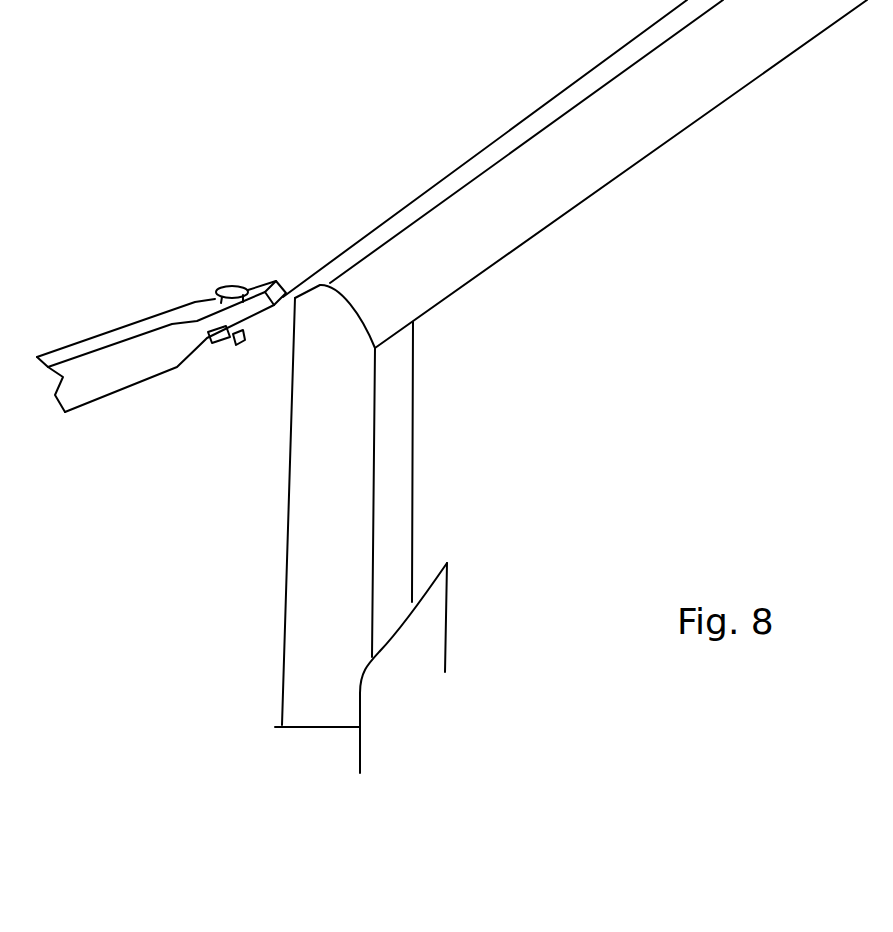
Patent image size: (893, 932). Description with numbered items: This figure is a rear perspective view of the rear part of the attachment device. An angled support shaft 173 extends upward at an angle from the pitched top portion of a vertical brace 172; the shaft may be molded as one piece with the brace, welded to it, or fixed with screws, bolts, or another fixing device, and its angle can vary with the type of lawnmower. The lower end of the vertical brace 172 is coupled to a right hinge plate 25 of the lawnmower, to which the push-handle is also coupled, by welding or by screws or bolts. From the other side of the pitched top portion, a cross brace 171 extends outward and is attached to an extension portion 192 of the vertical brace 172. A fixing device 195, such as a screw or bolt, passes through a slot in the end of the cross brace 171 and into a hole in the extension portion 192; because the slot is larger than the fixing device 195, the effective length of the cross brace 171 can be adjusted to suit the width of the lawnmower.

The angled support shaft 173 is at (573, 93).
The vertical brace 172 is at (402, 462).
The right hinge plate 25 is at (435, 632).
The cross brace 171 is at (105, 332).
The fixing device 195 is at (232, 285).
The extension portion 192 is at (258, 320).